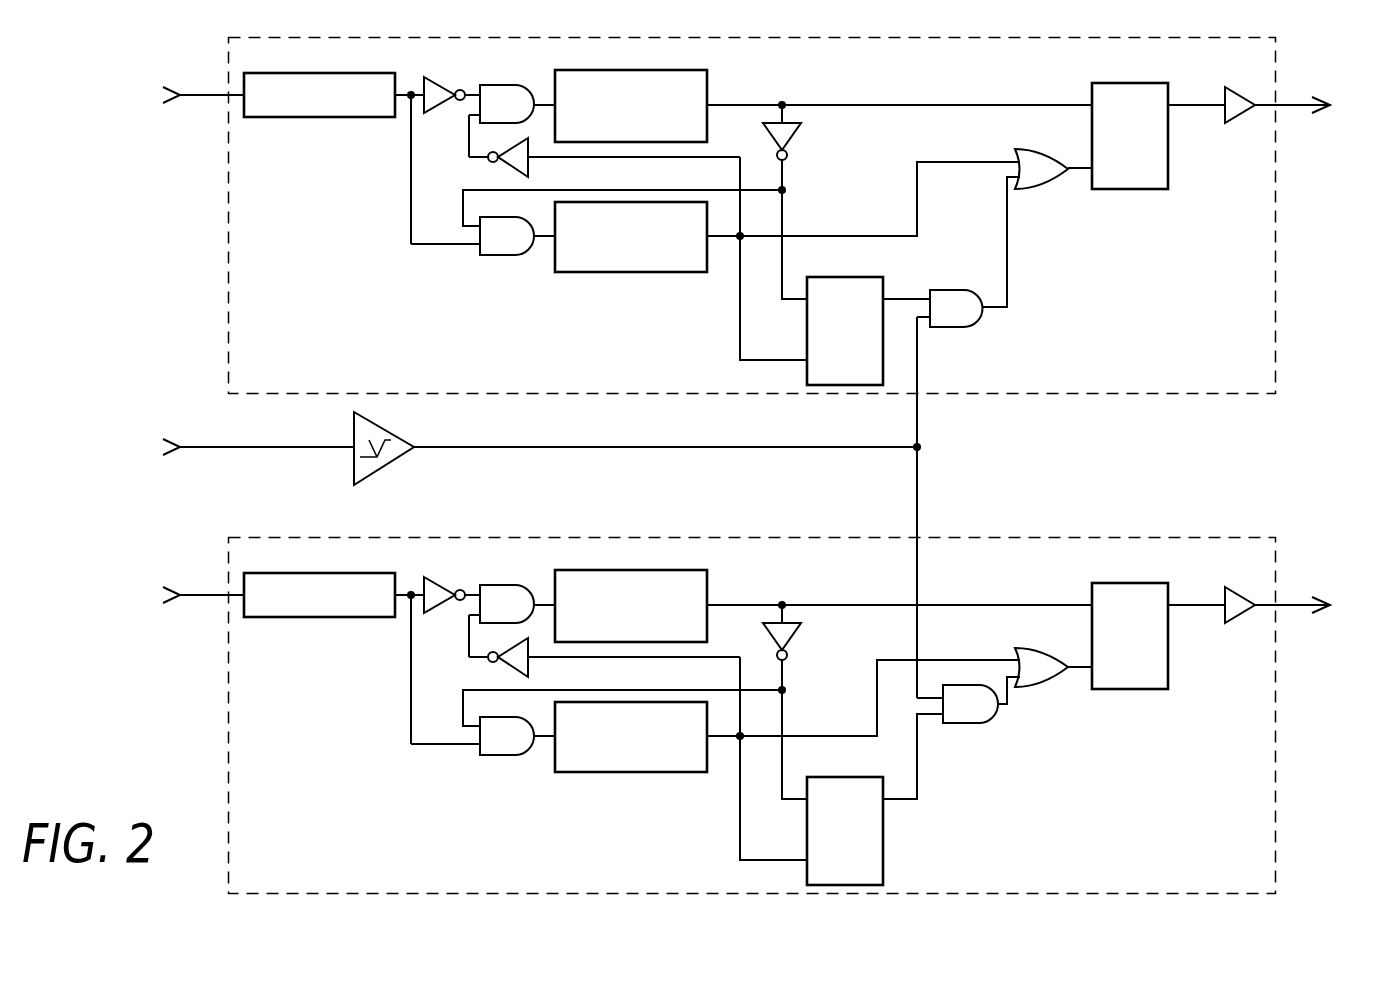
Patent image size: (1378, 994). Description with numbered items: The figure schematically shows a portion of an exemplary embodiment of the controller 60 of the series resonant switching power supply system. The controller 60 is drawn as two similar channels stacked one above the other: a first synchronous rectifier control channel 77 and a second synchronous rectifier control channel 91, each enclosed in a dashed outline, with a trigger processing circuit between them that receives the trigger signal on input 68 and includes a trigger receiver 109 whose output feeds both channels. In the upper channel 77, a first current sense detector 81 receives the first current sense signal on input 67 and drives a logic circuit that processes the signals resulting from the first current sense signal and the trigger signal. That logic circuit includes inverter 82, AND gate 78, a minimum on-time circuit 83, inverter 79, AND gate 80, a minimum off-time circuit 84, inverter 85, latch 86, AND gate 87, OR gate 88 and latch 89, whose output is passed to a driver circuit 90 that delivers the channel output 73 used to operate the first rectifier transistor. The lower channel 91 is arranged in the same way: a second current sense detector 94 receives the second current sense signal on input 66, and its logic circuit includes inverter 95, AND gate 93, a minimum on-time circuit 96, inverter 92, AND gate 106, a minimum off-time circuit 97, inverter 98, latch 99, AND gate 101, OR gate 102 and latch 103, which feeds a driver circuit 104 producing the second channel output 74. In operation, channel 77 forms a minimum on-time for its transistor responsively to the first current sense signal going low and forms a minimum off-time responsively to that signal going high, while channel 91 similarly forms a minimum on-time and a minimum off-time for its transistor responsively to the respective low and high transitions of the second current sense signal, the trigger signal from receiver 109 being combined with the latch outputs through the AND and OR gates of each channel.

The controller 60 is at (516, 931).
The input 66 is at (173, 586).
The input 67 is at (172, 83).
The input 68 is at (173, 438).
The first output 73 is at (1322, 97).
The second output 74 is at (1320, 597).
The first synchronous rectifier control channel 77 is at (227, 222).
The AND gate 78 is at (497, 85).
The inverter 79 is at (512, 172).
The AND gate 80 is at (493, 257).
The first current sense (CS1) detector 81 is at (327, 73).
The inverter 82 is at (435, 78).
The minimum on-time circuit 83 is at (632, 72).
The minimum off-time circuit 84 is at (618, 275).
The inverter 85 is at (791, 135).
The latch 86 is at (845, 277).
The AND gate 87 is at (945, 290).
The OR gate 88 is at (1035, 190).
The latch 89 is at (1122, 83).
The driver circuit 90 is at (1240, 88).
The second synchronous rectifier control channel 91 is at (227, 722).
The inverter 92 is at (512, 672).
The AND gate 93 is at (497, 585).
The second current sense (CS2) detector 94 is at (327, 573).
The inverter 95 is at (435, 578).
The minimum on-time circuit 96 is at (632, 572).
The minimum off-time circuit 97 is at (618, 775).
The inverter 98 is at (791, 635).
The latch 99 is at (845, 777).
The AND gate 101 is at (970, 725).
The OR gate 102 is at (1035, 688).
The latch 103 is at (1122, 583).
The driver circuit 104 is at (1240, 588).
The AND gate 106 is at (493, 757).
The trigger (TG) receiver 109 is at (388, 432).